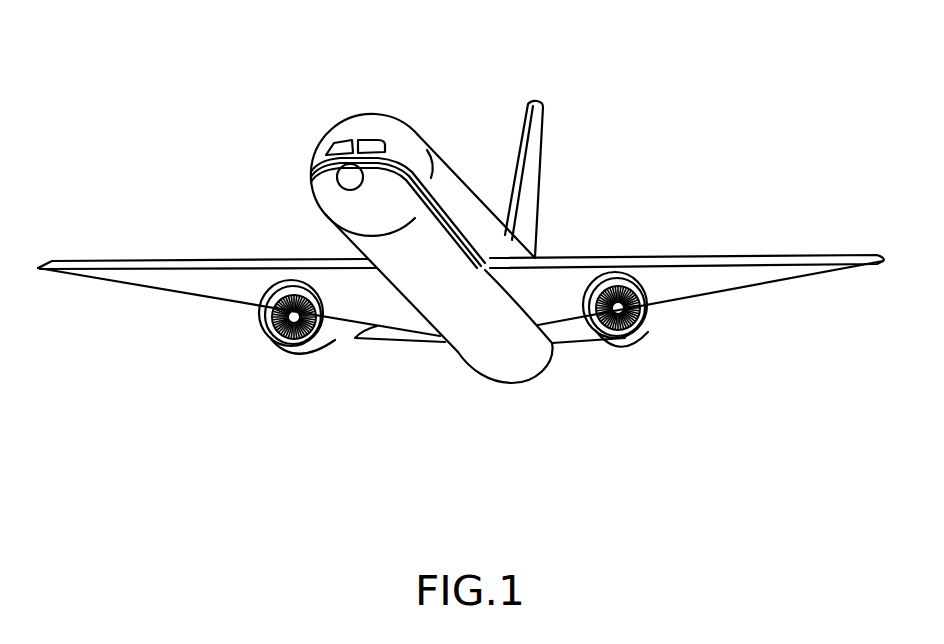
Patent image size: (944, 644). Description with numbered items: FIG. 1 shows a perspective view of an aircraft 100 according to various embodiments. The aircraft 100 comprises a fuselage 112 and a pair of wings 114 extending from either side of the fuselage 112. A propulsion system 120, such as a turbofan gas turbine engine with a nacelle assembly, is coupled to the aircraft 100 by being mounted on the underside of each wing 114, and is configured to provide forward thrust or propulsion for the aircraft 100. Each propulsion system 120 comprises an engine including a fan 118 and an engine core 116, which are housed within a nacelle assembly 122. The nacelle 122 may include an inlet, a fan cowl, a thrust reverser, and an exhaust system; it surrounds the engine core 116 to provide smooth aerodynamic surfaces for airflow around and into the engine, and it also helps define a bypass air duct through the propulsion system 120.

The aircraft 100 is at (231, 112).
The fuselage 112 is at (443, 178).
The wings 114 is at (133, 257).
The engine core 116 is at (313, 333).
The fan 118 is at (258, 333).
The propulsion system 120 is at (302, 350).
The nacelle assembly 122 is at (330, 323).